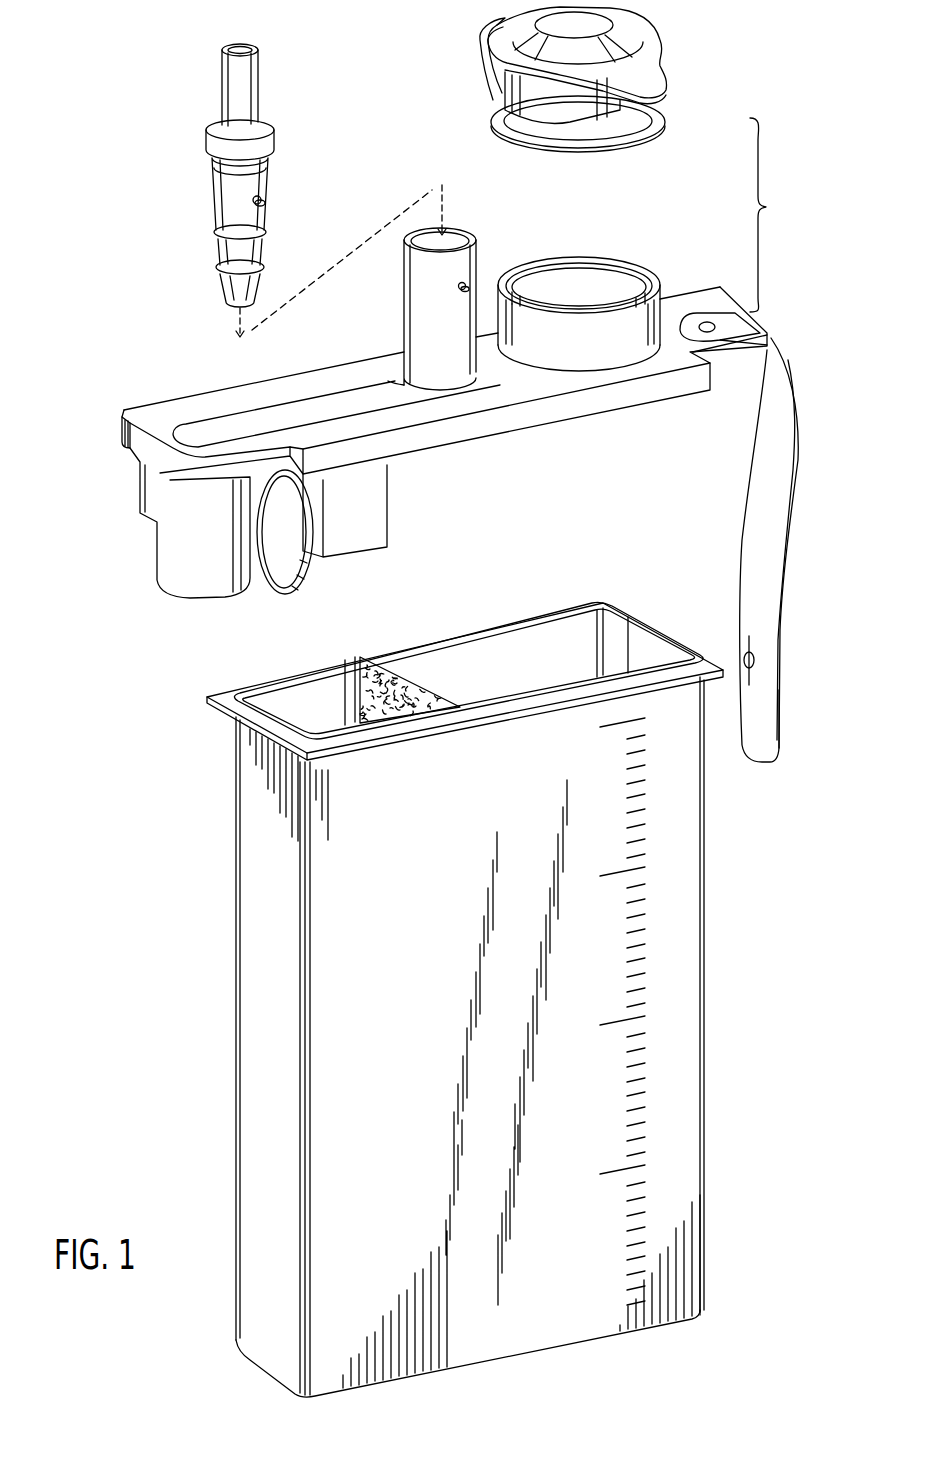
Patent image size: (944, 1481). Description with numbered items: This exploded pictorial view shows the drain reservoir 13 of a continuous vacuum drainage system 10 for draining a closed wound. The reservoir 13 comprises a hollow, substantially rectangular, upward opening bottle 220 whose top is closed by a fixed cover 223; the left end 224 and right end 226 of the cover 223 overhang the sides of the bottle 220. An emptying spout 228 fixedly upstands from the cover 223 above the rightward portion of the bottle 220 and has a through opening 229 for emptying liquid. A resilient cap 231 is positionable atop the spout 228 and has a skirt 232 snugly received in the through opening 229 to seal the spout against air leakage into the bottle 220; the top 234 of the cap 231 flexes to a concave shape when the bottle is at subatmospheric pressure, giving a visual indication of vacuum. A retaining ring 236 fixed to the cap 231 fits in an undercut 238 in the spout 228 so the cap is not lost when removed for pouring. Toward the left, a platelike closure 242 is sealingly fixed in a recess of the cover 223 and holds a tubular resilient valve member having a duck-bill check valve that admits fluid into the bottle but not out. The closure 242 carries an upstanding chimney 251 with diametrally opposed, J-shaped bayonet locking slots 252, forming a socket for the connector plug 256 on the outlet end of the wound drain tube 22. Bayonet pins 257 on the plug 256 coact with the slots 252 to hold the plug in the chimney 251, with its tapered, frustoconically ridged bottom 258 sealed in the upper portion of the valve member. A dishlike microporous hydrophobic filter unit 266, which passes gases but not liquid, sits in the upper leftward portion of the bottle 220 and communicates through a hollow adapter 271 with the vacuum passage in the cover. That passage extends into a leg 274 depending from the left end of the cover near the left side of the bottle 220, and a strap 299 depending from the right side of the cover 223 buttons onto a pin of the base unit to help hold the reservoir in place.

The continuous vacuum drainage system 10 is at (136, 1094).
The drain reservoir 13 is at (225, 1300).
The wound drain tube 22 is at (230, 93).
The bottle 220 is at (433, 999).
The cover 223 is at (433, 364).
The left end of the cover 224 is at (150, 417).
The right end of the cover 226 is at (700, 303).
The emptying spout 228 is at (637, 273).
The through opening 229 is at (607, 273).
The resilient cap 231 is at (650, 50).
The skirt 232 is at (527, 95).
The top of the cap 234 is at (597, 23).
The retaining ring 236 is at (653, 117).
The undercut 238 is at (620, 372).
The platelike closure 242 is at (336, 414).
The chimney 251 is at (420, 293).
The bayonet locking slots 252 is at (458, 289).
The connector plug 256 is at (227, 183).
The bayonet pins 257 is at (263, 198).
The frustoconically ridged bottom 258 is at (227, 259).
The microporous hydrophobic filter unit 266 is at (303, 577).
The hollow adapter 271 is at (363, 553).
The leg 274 is at (183, 563).
The strap 299 is at (770, 609).